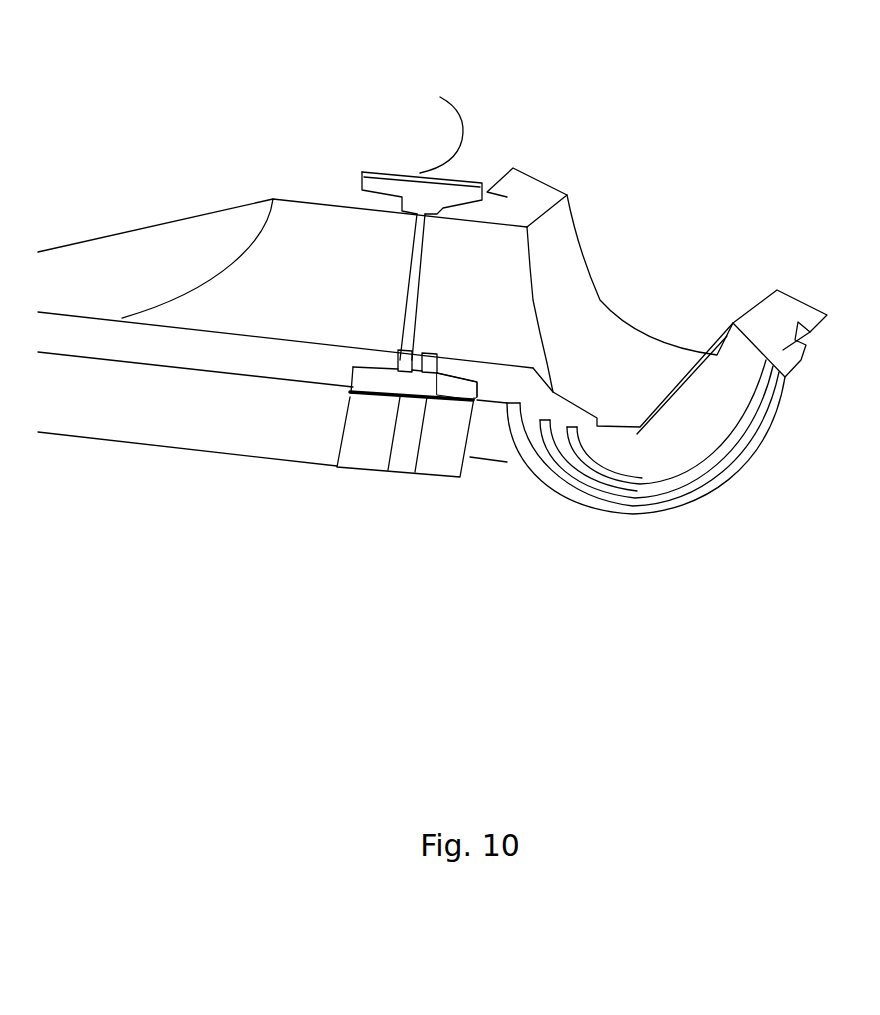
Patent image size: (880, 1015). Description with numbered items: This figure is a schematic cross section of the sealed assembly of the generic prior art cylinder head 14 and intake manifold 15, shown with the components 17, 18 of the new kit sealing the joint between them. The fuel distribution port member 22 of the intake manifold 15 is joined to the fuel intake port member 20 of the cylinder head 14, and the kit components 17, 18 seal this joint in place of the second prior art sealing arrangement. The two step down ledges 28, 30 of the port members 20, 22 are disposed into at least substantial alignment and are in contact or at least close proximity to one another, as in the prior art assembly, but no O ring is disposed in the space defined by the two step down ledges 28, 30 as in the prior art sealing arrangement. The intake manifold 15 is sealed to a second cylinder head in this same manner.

The cylinder head 14 is at (187, 393).
The intake manifold 15 is at (553, 285).
The kit component 17 is at (367, 170).
The kit component 18 is at (427, 190).
The fuel intake port member 20 is at (382, 358).
The fuel distribution port member 22 is at (453, 367).
The step down ledge 28 is at (407, 200).
The step down ledge 30 is at (433, 210).